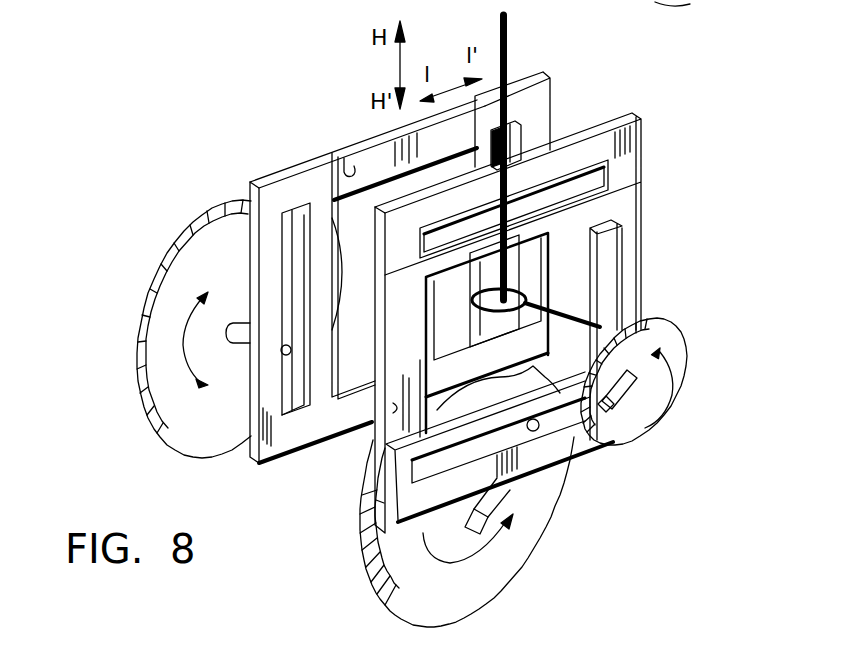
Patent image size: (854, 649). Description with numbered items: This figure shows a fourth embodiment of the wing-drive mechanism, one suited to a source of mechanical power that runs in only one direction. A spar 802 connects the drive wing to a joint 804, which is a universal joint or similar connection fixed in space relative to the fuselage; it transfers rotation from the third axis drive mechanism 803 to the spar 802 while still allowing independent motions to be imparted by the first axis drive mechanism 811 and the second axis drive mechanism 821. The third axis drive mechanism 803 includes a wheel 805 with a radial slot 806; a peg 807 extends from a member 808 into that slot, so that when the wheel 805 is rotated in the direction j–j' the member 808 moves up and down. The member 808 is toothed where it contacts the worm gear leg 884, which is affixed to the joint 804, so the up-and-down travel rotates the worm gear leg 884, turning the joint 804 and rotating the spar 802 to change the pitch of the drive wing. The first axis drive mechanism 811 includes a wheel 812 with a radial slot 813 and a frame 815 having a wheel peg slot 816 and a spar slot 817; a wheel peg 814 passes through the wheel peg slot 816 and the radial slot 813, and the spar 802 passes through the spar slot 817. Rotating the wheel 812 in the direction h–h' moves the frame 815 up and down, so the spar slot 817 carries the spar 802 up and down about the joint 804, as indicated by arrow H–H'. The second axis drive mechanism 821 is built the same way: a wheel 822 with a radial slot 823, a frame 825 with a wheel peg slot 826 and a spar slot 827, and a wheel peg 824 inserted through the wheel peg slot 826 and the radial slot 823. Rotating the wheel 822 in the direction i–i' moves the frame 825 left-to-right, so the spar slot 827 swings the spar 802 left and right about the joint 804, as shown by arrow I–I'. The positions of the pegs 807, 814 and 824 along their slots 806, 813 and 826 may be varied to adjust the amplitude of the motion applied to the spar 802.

The spar 802 is at (508, 40).
The third axis drive mechanism 803 is at (605, 322).
The joint 804 is at (472, 315).
The wheel 805 is at (688, 358).
The radial slot 806 is at (645, 378).
The peg 807 is at (612, 408).
The member 808 is at (605, 250).
The first axis drive mechanism 811 is at (372, 457).
The wheel 812 is at (457, 607).
The radial slot 813 is at (486, 500).
The wheel peg 814 is at (535, 427).
The frame 815 is at (372, 440).
The wheel peg slot 816 is at (370, 483).
The spar slot 817 is at (613, 167).
The second axis drive mechanism 821 is at (252, 180).
The wheel 822 is at (226, 428).
The radial slot 823 is at (228, 334).
The wheel peg 824 is at (283, 357).
The frame 825 is at (333, 150).
The wheel peg slot 826 is at (290, 248).
The spar slot 827 is at (397, 200).
The worm gear leg 884 is at (528, 300).